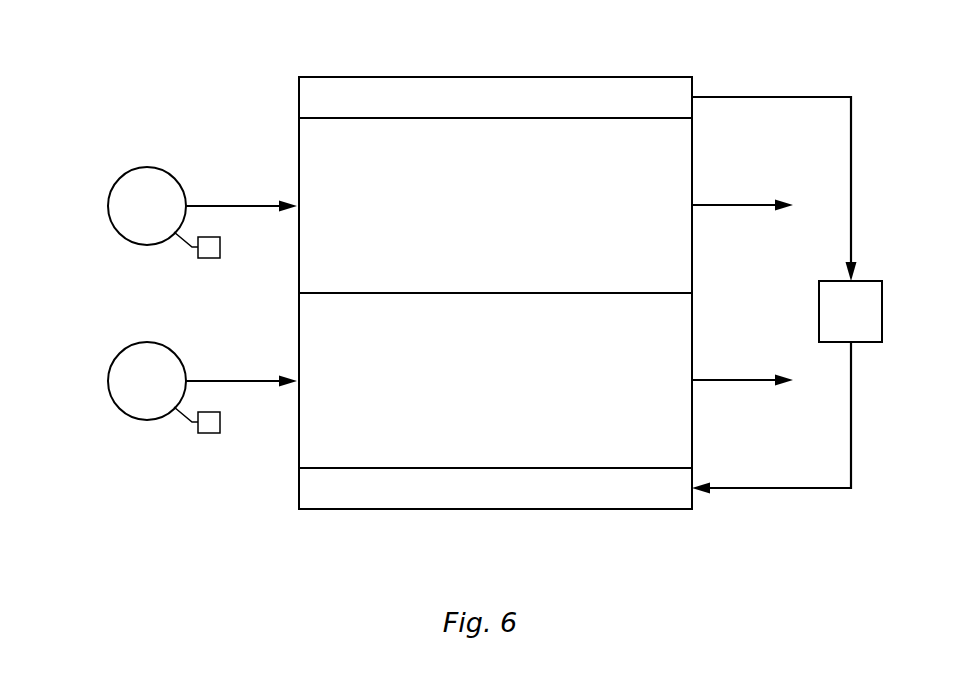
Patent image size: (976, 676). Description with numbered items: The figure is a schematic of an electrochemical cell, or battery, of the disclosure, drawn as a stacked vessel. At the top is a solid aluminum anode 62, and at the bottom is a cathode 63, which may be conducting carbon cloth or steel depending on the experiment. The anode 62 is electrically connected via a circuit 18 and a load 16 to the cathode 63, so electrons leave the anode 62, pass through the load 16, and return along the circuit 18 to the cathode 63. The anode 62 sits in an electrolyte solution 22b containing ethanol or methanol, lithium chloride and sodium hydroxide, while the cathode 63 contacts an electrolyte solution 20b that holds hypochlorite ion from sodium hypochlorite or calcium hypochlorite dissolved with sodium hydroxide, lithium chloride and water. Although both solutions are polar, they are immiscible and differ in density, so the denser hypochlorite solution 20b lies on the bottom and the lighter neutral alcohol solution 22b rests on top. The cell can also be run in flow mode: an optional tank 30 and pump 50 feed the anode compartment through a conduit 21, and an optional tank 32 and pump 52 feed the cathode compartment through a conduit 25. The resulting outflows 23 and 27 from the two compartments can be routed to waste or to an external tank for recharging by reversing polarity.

The load 16 is at (870, 280).
The circuit 18 is at (852, 443).
The electrolyte solution 20b is at (357, 417).
The conduit 21 is at (260, 203).
The electrolyte solution 22b is at (357, 177).
The outflow 23 is at (725, 203).
The conduit 25 is at (260, 378).
The outflow 27 is at (725, 378).
The tank 30 is at (110, 192).
The tank 32 is at (110, 367).
The pump 50 is at (209, 258).
The pump 52 is at (209, 433).
The anode 62 is at (585, 92).
The cathode 63 is at (628, 495).